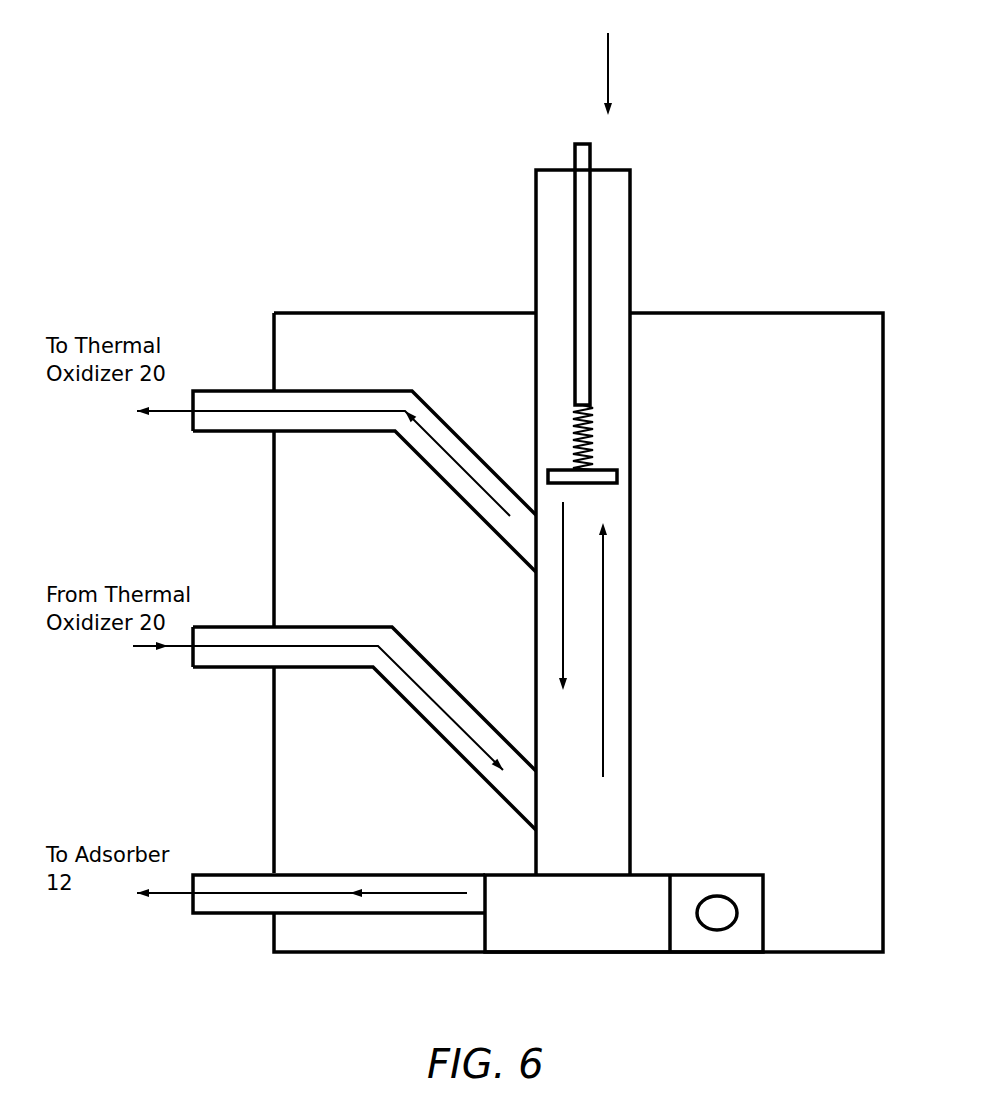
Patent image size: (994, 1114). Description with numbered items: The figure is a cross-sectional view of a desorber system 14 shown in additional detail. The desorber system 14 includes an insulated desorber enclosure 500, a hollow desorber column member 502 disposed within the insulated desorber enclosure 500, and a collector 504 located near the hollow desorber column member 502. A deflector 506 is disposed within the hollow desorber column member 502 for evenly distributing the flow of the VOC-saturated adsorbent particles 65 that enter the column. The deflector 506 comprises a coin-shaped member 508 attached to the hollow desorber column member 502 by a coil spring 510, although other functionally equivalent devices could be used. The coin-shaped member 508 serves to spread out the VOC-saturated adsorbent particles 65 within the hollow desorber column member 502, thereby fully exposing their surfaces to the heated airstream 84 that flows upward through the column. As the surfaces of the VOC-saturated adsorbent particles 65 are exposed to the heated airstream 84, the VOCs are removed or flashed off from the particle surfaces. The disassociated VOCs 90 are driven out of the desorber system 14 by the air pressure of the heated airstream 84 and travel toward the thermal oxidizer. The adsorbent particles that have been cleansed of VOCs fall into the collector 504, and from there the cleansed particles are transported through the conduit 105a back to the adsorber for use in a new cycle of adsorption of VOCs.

The desorber system 14 is at (410, 158).
The VOC-saturated adsorbent particles 65 is at (612, 66).
The heated airstream 84 is at (148, 648).
The disassociated VOCs 90 is at (173, 413).
The conduit 105a is at (233, 915).
The insulated desorber enclosure 500 is at (357, 311).
The hollow desorber column member 502 is at (631, 402).
The collector 504 is at (650, 874).
The deflector 506 is at (607, 369).
The coin-shaped member 508 is at (618, 477).
The coil spring 510 is at (592, 435).